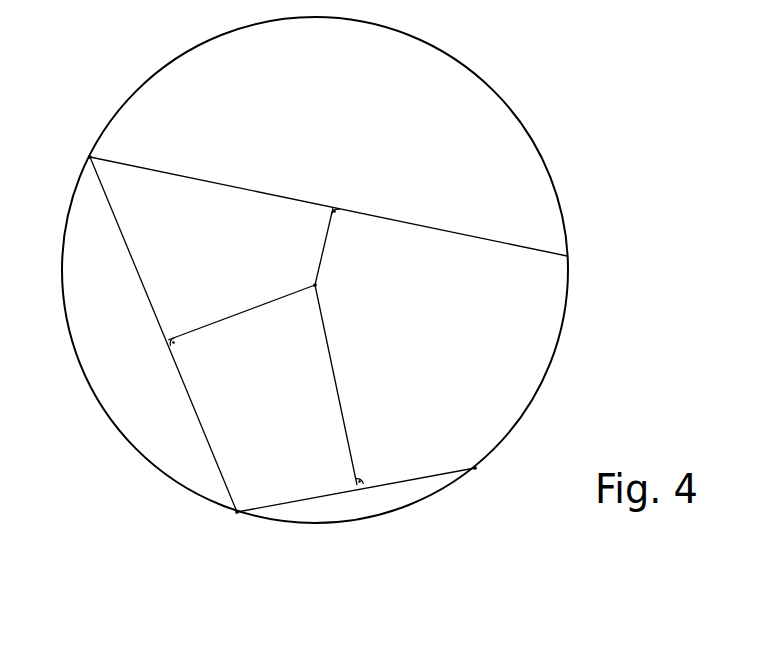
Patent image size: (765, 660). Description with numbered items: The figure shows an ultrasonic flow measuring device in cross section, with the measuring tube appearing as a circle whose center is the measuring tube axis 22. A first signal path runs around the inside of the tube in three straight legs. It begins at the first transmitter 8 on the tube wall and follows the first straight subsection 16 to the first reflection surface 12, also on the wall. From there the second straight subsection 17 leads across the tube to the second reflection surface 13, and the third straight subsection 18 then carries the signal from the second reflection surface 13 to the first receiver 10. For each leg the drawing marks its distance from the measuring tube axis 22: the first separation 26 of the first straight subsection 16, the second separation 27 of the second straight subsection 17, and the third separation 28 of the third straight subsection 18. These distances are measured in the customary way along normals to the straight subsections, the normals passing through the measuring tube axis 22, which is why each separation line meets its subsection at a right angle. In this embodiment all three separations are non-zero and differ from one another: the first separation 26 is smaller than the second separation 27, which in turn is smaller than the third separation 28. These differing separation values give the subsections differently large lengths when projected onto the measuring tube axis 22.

The first transmitter 8 is at (567, 256).
The first receiver 10 is at (475, 468).
The first reflection surface 12 is at (90, 157).
The second reflection surface 13 is at (237, 512).
The first straight subsection 16 is at (243, 188).
The second straight subsection 17 is at (130, 253).
The third straight subsection 18 is at (418, 477).
The measuring tube axis 22 is at (318, 285).
The first separation 26 is at (322, 252).
The second separation 27 is at (235, 316).
The third separation 28 is at (338, 392).